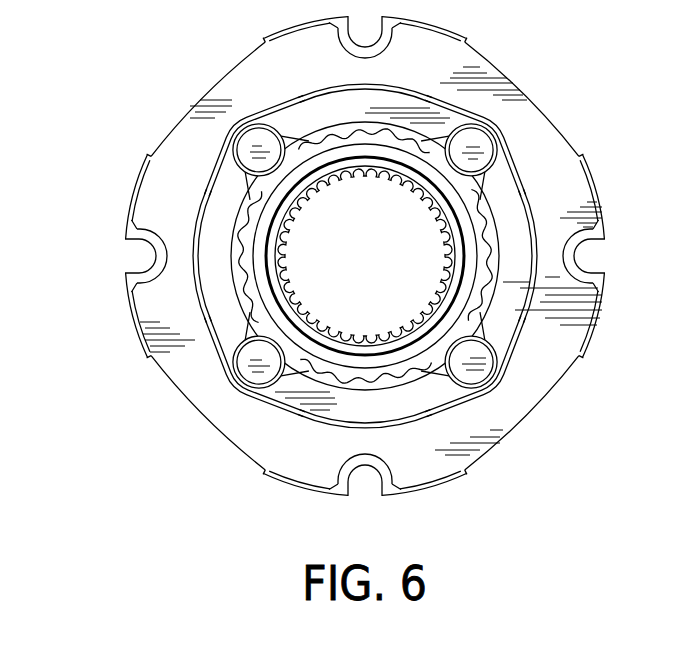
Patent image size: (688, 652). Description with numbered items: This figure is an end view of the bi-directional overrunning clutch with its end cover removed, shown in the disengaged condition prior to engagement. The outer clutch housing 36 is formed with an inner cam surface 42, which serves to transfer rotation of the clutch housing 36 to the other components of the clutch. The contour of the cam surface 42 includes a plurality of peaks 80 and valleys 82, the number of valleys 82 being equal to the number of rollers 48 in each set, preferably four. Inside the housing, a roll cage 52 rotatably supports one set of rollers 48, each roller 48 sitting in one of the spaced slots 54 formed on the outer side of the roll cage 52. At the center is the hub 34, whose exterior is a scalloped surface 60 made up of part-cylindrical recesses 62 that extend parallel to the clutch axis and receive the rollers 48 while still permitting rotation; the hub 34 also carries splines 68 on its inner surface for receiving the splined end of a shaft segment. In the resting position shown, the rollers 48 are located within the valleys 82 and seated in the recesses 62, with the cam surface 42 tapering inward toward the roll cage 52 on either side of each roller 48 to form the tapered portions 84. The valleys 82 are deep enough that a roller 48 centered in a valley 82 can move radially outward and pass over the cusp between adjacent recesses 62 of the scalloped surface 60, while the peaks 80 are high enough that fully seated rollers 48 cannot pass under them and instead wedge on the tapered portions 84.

The clutch housing 36 is at (248, 93).
The roll cage 52 is at (217, 290).
The peaks 80 is at (338, 430).
The recesses 62 is at (248, 208).
The tapered portions 84 is at (232, 375).
The inner cam surface 42 is at (256, 392).
The valleys 82 is at (242, 383).
The scalloped surface 60 is at (237, 232).
The hub 34 is at (268, 265).
The splines 68 is at (285, 230).
The rollers 48 is at (256, 362).
The slots 54 is at (496, 366).